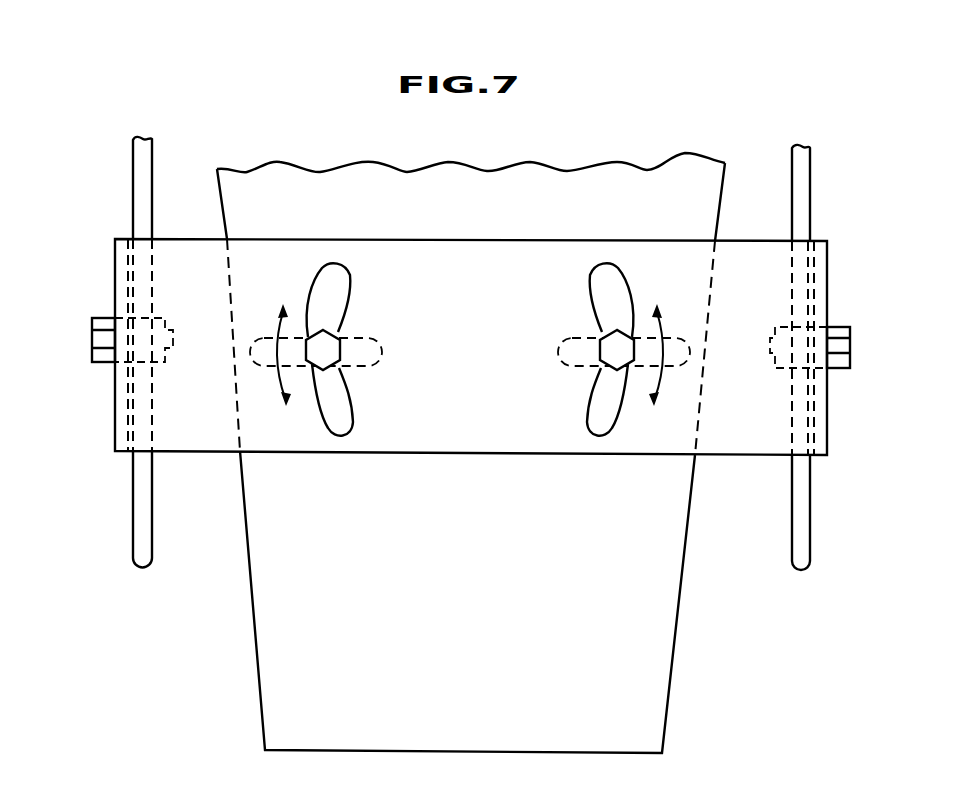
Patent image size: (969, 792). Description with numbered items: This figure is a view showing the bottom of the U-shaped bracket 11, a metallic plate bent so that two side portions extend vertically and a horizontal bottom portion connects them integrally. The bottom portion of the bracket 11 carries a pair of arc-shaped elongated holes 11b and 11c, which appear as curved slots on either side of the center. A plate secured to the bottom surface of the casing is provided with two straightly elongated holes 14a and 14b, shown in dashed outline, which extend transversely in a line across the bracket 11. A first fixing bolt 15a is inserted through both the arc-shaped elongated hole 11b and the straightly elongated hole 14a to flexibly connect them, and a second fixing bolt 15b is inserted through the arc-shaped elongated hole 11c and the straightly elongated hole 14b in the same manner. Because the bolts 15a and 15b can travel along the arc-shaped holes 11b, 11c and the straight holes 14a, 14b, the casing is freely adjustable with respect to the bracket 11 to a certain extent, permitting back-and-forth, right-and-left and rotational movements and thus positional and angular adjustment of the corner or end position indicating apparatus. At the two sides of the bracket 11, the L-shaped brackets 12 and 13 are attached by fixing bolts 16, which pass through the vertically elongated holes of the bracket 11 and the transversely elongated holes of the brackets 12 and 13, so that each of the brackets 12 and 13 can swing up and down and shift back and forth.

The U-shaped bracket 11 is at (577, 240).
The arc-shaped elongated hole 11b is at (350, 403).
The arc-shaped elongated hole 11c is at (592, 403).
The L-shaped bracket 12 is at (147, 177).
The L-shaped bracket 13 is at (801, 203).
The straightly elongated hole 14a is at (358, 338).
The straightly elongated hole 14b is at (563, 366).
The first fixing bolt 15a is at (337, 326).
The second fixing bolt 15b is at (633, 341).
The fixing bolt 16 is at (93, 318).